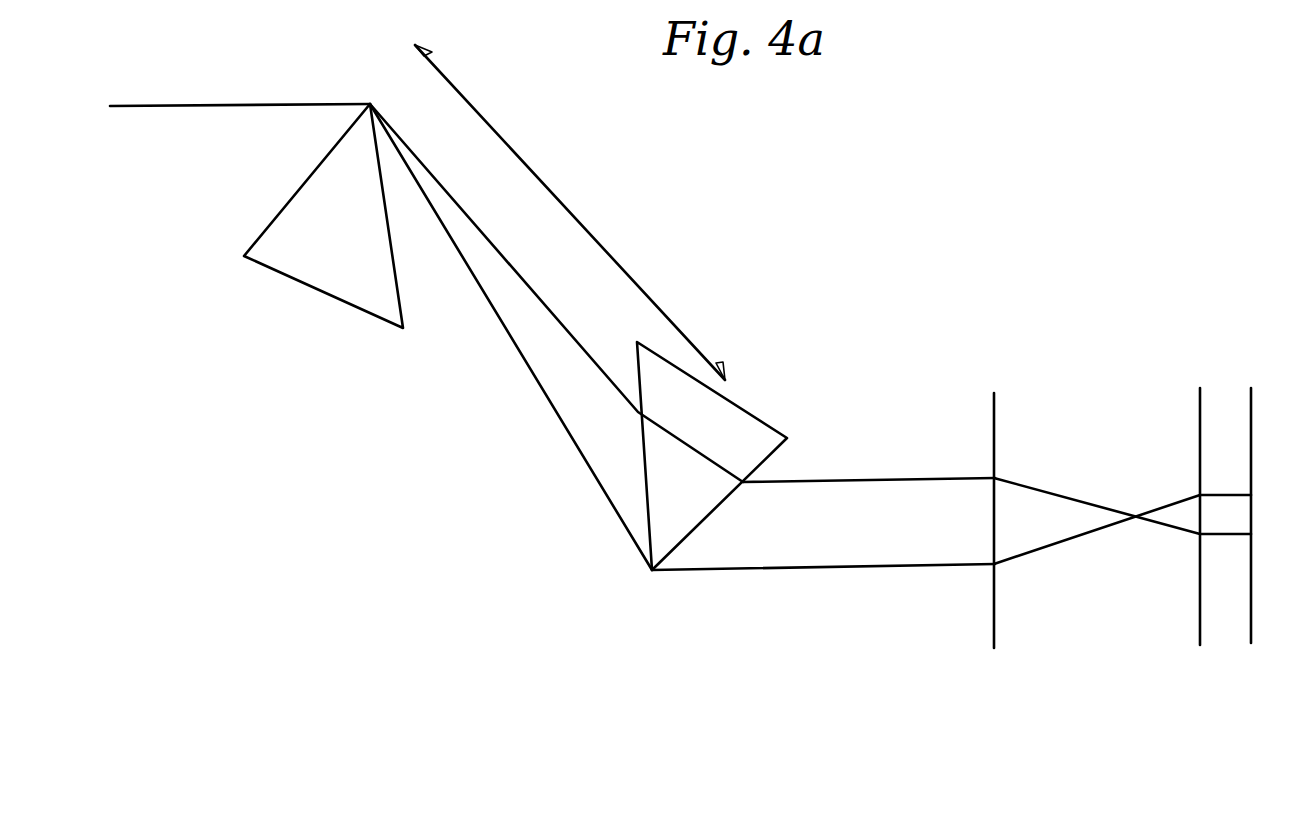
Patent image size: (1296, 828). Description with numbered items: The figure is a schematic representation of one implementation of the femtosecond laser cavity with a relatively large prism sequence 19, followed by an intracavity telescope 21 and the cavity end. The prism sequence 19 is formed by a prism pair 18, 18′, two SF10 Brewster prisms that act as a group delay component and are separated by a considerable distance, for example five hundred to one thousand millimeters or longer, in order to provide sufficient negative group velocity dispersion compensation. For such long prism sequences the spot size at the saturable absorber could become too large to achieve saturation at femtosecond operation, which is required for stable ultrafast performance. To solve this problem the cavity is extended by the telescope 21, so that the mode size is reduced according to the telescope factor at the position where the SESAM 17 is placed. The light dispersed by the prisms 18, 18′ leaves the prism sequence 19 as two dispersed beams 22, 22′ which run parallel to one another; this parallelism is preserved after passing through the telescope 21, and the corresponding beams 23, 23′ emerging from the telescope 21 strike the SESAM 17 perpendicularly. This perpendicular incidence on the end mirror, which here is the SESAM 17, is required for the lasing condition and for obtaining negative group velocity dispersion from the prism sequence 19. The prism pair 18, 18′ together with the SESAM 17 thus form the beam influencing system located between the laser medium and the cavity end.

The SESAM 17 is at (1248, 400).
The prism 18 is at (288, 258).
The prism 18′ is at (678, 515).
The prism sequence 19 is at (570, 212).
The telescope 21 is at (1192, 380).
The dispersed beam 22 is at (813, 480).
The dispersed beam 22′ is at (747, 570).
The beam 23 is at (1238, 537).
The beam 23′ is at (1235, 490).